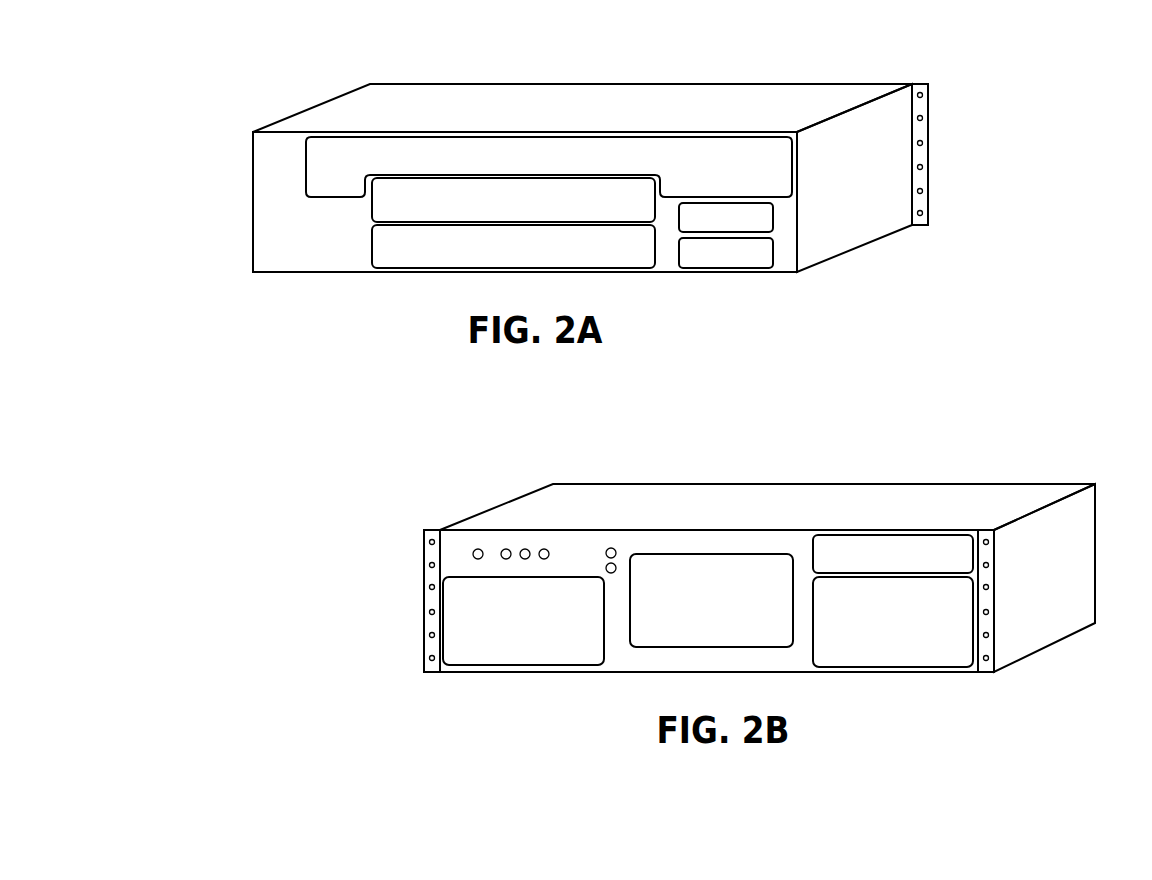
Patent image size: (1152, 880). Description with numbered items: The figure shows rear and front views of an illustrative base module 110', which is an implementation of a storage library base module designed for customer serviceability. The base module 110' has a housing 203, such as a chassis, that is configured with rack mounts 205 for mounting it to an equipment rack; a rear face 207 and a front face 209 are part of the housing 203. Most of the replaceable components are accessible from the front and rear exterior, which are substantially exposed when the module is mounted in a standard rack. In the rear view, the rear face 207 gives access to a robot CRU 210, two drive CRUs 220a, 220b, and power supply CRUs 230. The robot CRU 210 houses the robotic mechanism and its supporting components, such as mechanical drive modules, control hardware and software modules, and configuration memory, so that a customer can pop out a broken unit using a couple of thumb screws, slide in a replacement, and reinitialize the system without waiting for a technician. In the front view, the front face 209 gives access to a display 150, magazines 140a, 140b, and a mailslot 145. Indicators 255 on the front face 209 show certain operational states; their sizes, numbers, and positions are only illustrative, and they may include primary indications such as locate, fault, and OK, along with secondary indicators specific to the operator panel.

In FIG. 2A, the base module 110' is at (915, 26).
In FIG. 2B, the base module 110' is at (1078, 426).
In FIG. 2A, the housing 203 is at (337, 97).
In FIG. 2B, the housing 203 is at (520, 493).
In FIG. 2A, the rack mounts 205 is at (928, 125).
In FIG. 2B, the rack mounts 205 is at (424, 577).
In FIG. 2A, the rear face 207 is at (320, 258).
In FIG. 2B, the front face 209 is at (770, 545).
In FIG. 2A, the robot CRU 210 is at (549, 167).
In FIG. 2A, the drive CRU 220a is at (513, 200).
In FIG. 2A, the drive CRU 220b is at (513, 246).
In FIG. 2A, the power supply CRUs 230 is at (773, 252).
In FIG. 2B, the indicators 255 is at (547, 550).
In FIG. 2B, the magazine 140a is at (523, 621).
In FIG. 2B, the magazine 140b is at (893, 622).
In FIG. 2B, the mailslot 145 is at (893, 554).
In FIG. 2B, the display 150 is at (711, 600).